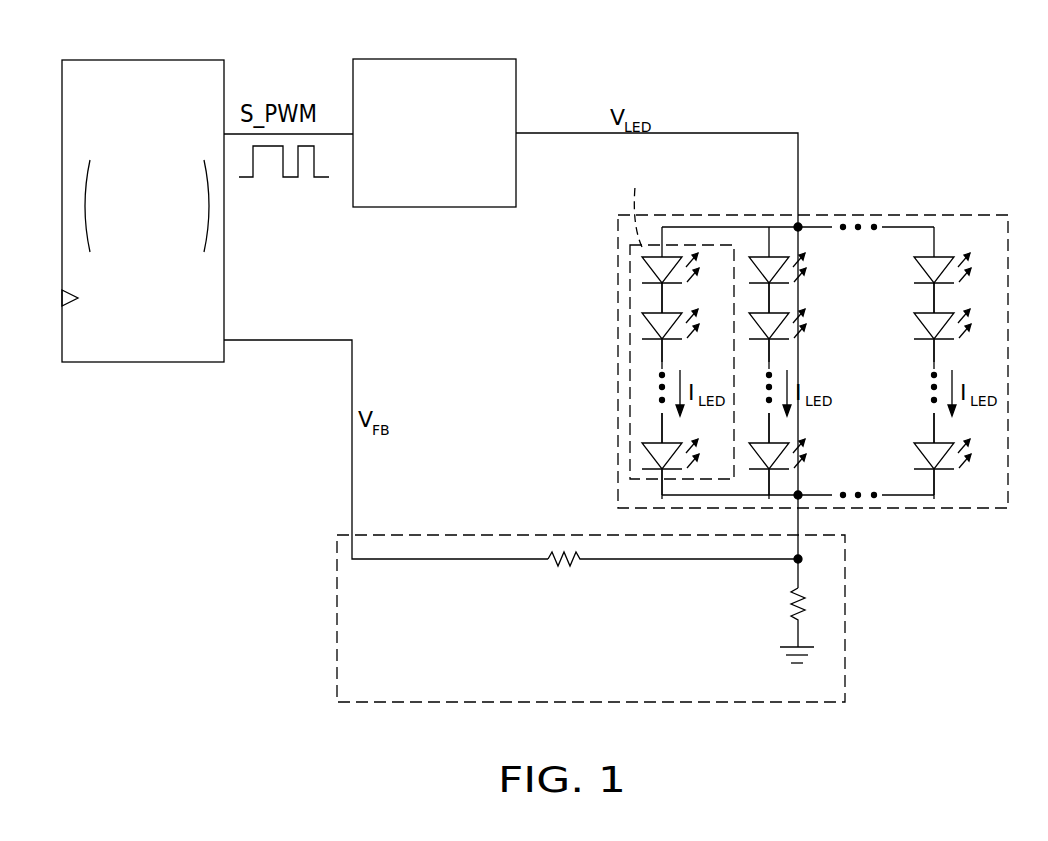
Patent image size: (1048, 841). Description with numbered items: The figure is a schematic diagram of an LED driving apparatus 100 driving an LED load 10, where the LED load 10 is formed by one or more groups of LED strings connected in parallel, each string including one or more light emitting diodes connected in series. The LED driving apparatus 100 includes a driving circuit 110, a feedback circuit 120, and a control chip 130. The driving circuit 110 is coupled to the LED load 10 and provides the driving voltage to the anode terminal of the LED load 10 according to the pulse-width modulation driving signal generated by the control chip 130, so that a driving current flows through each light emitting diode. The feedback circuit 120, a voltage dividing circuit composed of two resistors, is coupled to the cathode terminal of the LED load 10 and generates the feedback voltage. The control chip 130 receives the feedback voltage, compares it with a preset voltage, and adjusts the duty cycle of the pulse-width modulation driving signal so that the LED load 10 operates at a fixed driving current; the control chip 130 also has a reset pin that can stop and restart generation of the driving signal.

The LED driving apparatus 100 is at (1011, 719).
The driving circuit 110 is at (433, 59).
The feedback circuit 120 is at (422, 535).
The control chip 130 is at (142, 60).
The LED load 10 is at (985, 215).